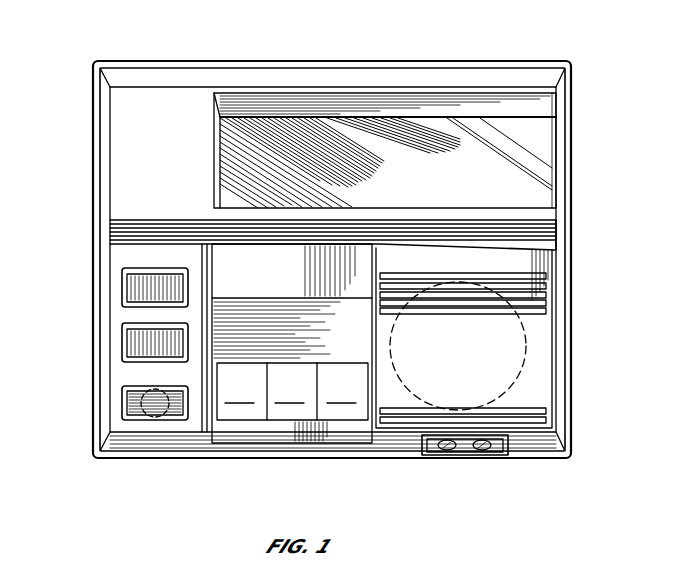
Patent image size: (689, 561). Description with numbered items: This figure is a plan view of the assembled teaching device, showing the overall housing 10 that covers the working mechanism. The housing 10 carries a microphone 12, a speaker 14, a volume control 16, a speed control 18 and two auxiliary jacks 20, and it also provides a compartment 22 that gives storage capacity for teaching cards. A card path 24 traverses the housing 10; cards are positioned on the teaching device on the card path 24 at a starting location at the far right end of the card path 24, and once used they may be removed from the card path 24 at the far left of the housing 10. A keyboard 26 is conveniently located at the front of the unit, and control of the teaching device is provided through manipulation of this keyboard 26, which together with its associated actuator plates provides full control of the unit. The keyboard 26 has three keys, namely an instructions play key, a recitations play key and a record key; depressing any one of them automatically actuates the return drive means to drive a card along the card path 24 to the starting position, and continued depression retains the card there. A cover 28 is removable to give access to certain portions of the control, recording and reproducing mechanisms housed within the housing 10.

The housing 10 is at (155, 76).
The microphone 12 is at (158, 413).
The speaker 14 is at (527, 385).
The volume control 16 is at (143, 283).
The speed control 18 is at (135, 338).
The auxiliary jacks 20 is at (483, 452).
The compartment 22 is at (540, 152).
The card path 24 is at (548, 256).
The keyboard 26 is at (292, 419).
The cover 28 is at (284, 283).